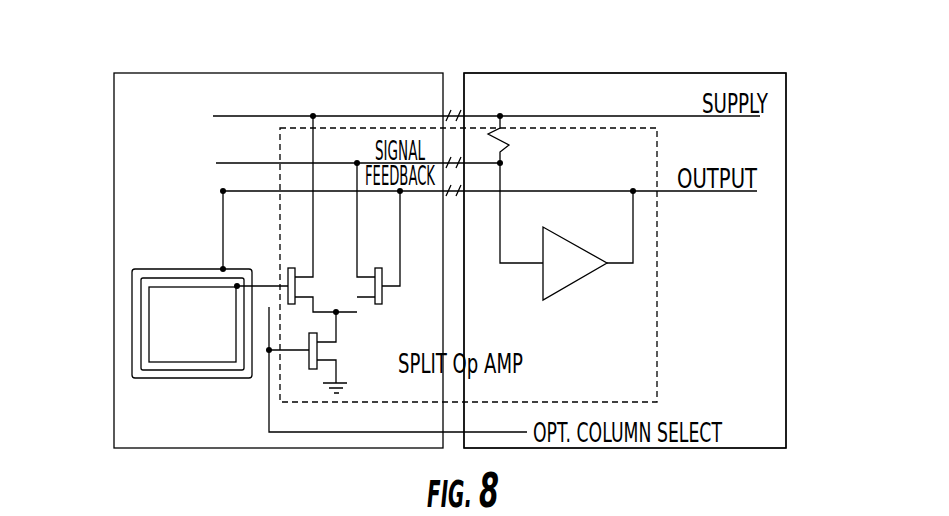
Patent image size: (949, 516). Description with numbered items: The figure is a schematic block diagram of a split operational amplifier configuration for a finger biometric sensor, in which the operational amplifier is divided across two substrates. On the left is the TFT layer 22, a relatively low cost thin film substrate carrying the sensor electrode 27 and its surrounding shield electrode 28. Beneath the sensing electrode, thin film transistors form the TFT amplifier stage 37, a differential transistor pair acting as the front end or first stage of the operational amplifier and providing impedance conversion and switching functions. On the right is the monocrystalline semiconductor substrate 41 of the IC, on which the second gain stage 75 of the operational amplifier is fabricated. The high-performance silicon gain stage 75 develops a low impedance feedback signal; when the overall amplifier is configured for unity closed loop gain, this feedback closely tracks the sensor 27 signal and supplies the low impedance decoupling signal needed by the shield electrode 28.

The TFT layer 22 is at (147, 73).
The TFT amplifier stage 37 is at (270, 242).
The shield electrode 28 is at (132, 300).
The sensor electrode 27 is at (157, 349).
The monocrystalline semiconductor substrate 41 is at (786, 112).
The second gain stage 75 is at (593, 275).